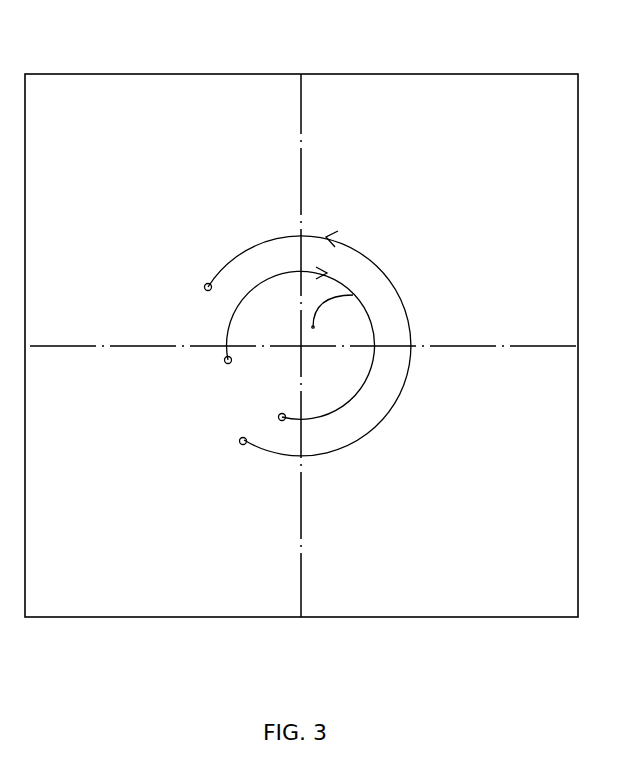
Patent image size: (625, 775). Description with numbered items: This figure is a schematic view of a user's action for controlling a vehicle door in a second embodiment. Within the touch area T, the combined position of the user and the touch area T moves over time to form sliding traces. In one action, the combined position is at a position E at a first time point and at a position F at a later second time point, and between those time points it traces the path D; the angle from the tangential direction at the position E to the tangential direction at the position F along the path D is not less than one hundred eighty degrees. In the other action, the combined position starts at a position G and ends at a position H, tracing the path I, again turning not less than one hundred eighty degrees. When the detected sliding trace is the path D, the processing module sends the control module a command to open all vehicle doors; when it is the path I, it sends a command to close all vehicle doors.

The touch area T is at (453, 102).
The path D is at (367, 256).
The position E is at (242, 445).
The position F is at (204, 289).
The position G is at (232, 359).
The position H is at (278, 417).
The path I is at (316, 347).